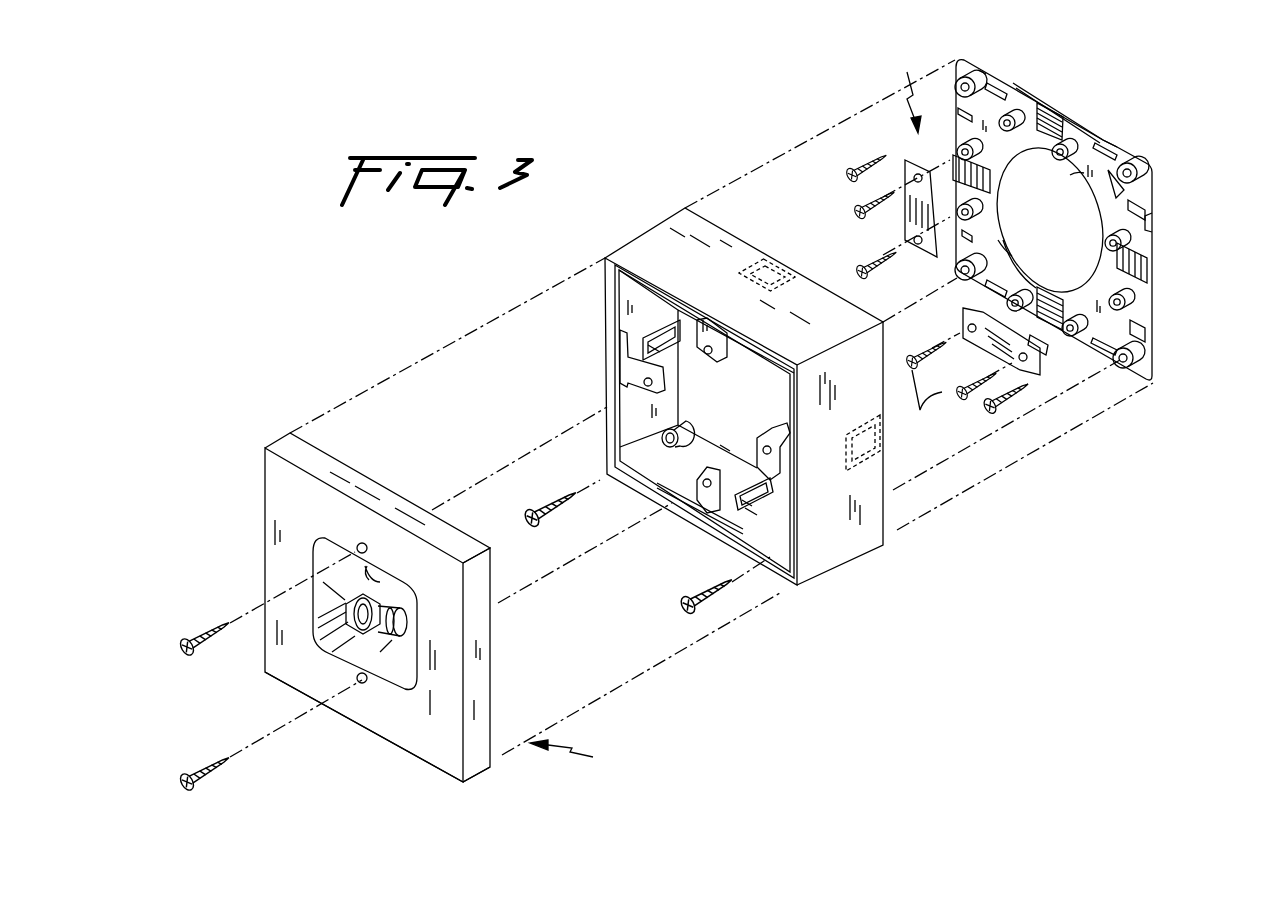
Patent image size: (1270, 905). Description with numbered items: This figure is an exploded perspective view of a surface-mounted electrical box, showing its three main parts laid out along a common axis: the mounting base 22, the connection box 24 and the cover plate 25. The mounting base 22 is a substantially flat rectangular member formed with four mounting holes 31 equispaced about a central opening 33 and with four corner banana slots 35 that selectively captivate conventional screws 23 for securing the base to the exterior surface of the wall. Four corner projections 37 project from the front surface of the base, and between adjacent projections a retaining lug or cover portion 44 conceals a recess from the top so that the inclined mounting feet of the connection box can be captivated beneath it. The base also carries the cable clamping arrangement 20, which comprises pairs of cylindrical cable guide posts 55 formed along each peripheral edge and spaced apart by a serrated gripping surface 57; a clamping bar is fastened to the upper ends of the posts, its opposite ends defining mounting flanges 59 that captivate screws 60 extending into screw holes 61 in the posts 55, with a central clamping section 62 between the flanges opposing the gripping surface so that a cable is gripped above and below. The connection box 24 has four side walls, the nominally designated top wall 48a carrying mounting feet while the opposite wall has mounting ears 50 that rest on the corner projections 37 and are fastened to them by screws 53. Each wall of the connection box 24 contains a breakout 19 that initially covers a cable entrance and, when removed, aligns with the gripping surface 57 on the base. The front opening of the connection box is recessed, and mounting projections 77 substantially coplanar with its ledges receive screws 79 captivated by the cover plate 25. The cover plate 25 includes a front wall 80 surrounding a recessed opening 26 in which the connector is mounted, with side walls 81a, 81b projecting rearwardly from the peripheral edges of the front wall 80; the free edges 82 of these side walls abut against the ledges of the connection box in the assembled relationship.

The breakout 19 is at (764, 413).
The cable clamping arrangement 20 is at (905, 91).
The mounting base 22 is at (1084, 240).
The screws 23 is at (863, 168).
The connection box 24 is at (870, 568).
The cover plate 25 is at (574, 755).
The recessed opening 26 is at (306, 647).
The mounting holes 31 is at (990, 186).
The central opening 33 is at (1020, 224).
The corner banana slots 35 is at (1113, 197).
The corner projections 37 is at (967, 80).
The cover portion 44 is at (1110, 148).
The top wall 48a is at (682, 210).
The mounting ears 50 is at (682, 430).
The screws 53 is at (560, 508).
The cable guide posts 55 is at (1150, 280).
The serrated gripping surface 57 is at (1047, 123).
The mounting flanges 59 is at (1040, 380).
The screws 60 is at (923, 402).
The screw holes 61 is at (1105, 244).
The central clamping section 62 is at (997, 352).
The mounting projections 77 is at (702, 510).
The screws 79 is at (218, 768).
The front wall 80 is at (380, 613).
The side wall 81a is at (390, 498).
The side wall 81b is at (463, 755).
The free edges 82 is at (493, 672).